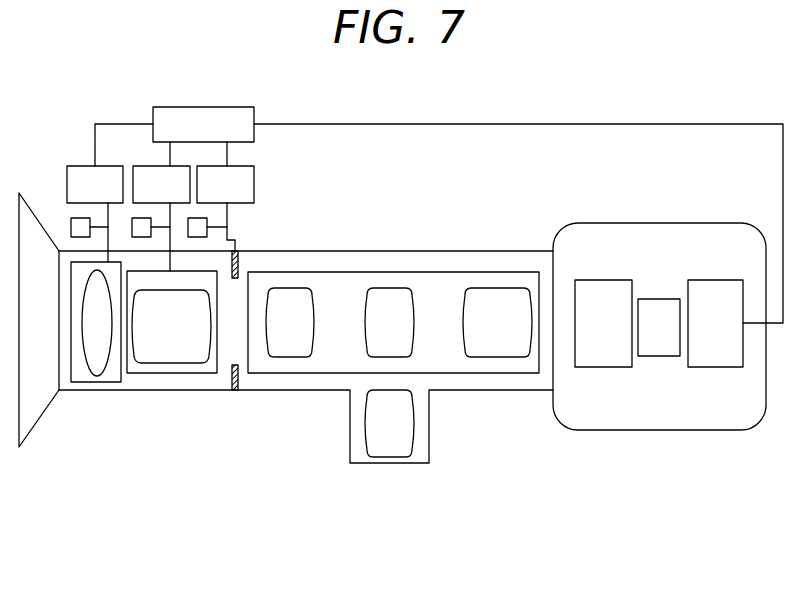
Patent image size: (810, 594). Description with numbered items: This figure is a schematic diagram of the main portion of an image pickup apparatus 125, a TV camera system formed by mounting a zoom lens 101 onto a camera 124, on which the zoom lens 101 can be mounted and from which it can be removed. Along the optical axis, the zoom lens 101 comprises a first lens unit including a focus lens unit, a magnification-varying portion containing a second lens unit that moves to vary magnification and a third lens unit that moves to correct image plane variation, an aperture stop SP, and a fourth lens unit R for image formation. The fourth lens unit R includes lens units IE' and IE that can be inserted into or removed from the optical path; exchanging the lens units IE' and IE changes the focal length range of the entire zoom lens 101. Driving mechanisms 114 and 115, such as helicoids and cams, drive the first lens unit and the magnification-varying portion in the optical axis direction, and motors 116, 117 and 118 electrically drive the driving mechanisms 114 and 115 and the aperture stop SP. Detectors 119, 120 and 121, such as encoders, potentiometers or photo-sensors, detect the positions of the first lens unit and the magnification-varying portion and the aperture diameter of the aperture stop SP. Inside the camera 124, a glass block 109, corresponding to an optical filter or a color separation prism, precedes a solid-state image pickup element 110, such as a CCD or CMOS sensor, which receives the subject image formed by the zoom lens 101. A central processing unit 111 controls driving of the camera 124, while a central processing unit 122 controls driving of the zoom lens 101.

The zoom lens 101 is at (32, 207).
The glass block 109 is at (603, 323).
The solid-state image pickup element 110 is at (659, 327).
The central processing unit 111 is at (715, 323).
The driving mechanism 114 is at (93, 382).
The driving mechanism 115 is at (168, 373).
The motor 116 is at (95, 214).
The motor 117 is at (161, 218).
The motor 118 is at (225, 208).
The detector 119 is at (71, 223).
The detector 120 is at (132, 218).
The detector 121 is at (246, 219).
The central processing unit 122 is at (174, 136).
The camera 124 is at (659, 362).
The image pickup apparatus 125 is at (395, 314).
The aperture stop SP is at (234, 390).
The fourth lens unit R is at (487, 272).
The lens unit IE' is at (389, 273).
The lens unit IE is at (353, 423).